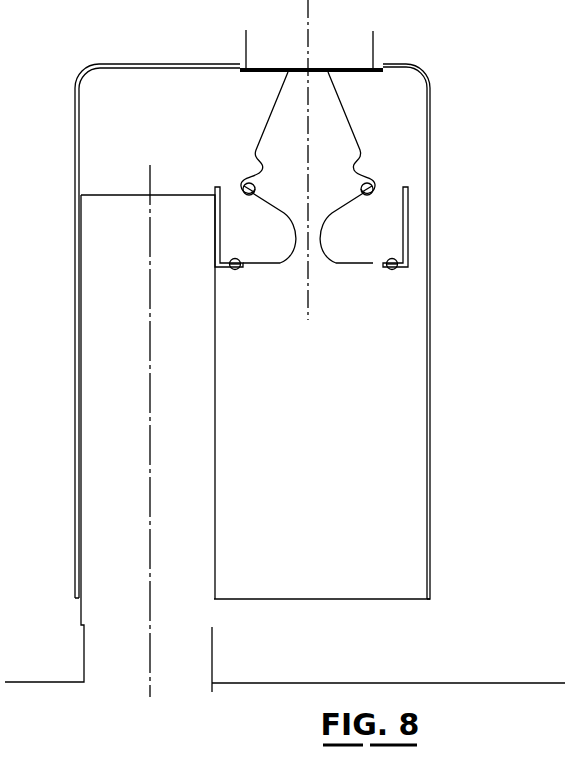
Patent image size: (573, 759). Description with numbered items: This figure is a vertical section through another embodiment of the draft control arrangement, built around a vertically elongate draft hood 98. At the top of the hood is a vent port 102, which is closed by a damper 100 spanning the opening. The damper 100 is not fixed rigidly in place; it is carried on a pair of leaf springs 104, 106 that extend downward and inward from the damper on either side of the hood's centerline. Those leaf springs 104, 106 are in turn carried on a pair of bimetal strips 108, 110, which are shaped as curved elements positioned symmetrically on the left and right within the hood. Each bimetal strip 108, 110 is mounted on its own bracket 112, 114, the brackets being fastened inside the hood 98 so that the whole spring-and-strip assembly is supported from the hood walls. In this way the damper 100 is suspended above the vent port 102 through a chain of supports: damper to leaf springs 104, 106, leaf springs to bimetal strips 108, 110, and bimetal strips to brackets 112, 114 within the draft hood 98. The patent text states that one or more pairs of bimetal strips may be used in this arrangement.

The draft hood 98 is at (434, 103).
The damper 100 is at (357, 66).
The vent port 102 is at (262, 53).
The leaf spring 104 is at (270, 113).
The leaf spring 106 is at (349, 117).
The bimetal strip 108 is at (278, 264).
The bimetal strip 110 is at (357, 264).
The bracket 112 is at (218, 186).
The bracket 114 is at (407, 222).